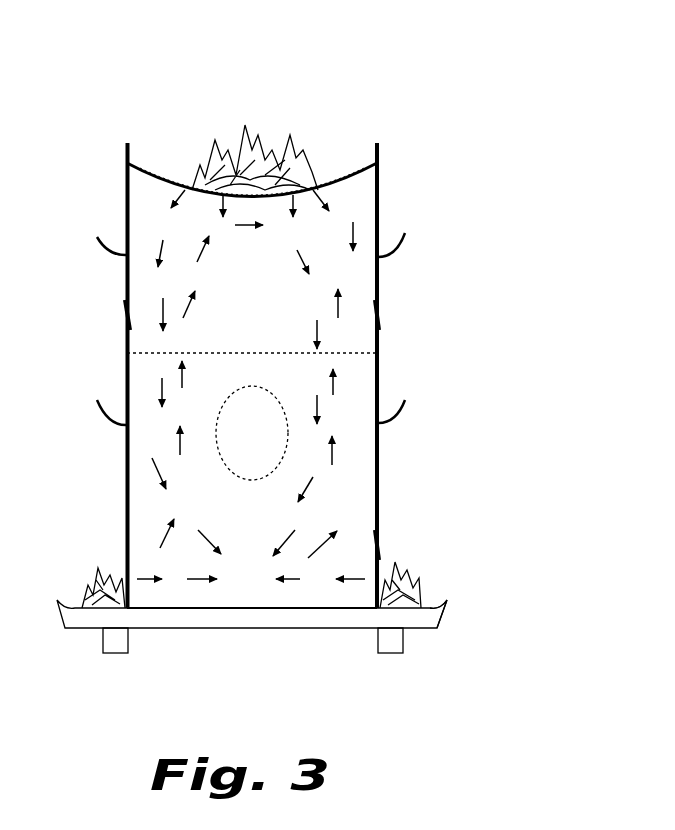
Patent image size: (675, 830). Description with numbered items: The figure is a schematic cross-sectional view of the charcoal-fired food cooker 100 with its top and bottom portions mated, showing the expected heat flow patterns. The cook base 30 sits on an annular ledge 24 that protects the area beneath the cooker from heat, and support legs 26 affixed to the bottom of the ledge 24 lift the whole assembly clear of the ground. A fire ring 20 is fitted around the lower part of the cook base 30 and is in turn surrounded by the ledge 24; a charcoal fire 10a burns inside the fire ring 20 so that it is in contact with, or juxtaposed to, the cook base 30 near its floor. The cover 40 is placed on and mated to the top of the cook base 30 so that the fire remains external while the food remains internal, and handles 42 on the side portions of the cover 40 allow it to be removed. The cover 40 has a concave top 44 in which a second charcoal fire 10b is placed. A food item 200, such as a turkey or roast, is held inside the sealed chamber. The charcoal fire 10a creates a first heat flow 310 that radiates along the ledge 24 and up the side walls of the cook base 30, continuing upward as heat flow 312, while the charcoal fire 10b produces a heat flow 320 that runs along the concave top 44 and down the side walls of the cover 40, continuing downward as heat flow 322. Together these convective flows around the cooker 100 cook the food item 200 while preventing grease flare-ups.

The charcoal-fired cooker 100 is at (530, 90).
The charcoal fire 10a is at (400, 570).
The charcoal fire 10b is at (262, 147).
The fire ring 20 is at (420, 590).
The annular ledge 24 is at (437, 625).
The support legs 26 is at (125, 640).
The cook base 30 is at (398, 460).
The cover 40 is at (525, 262).
The handles 42 is at (395, 250).
The concave top 44 is at (337, 182).
The food item 200 is at (268, 415).
The heat flow 310 is at (345, 576).
The heat flow 312 is at (378, 316).
The heat flow 320 is at (183, 193).
The heat flow 322 is at (163, 308).